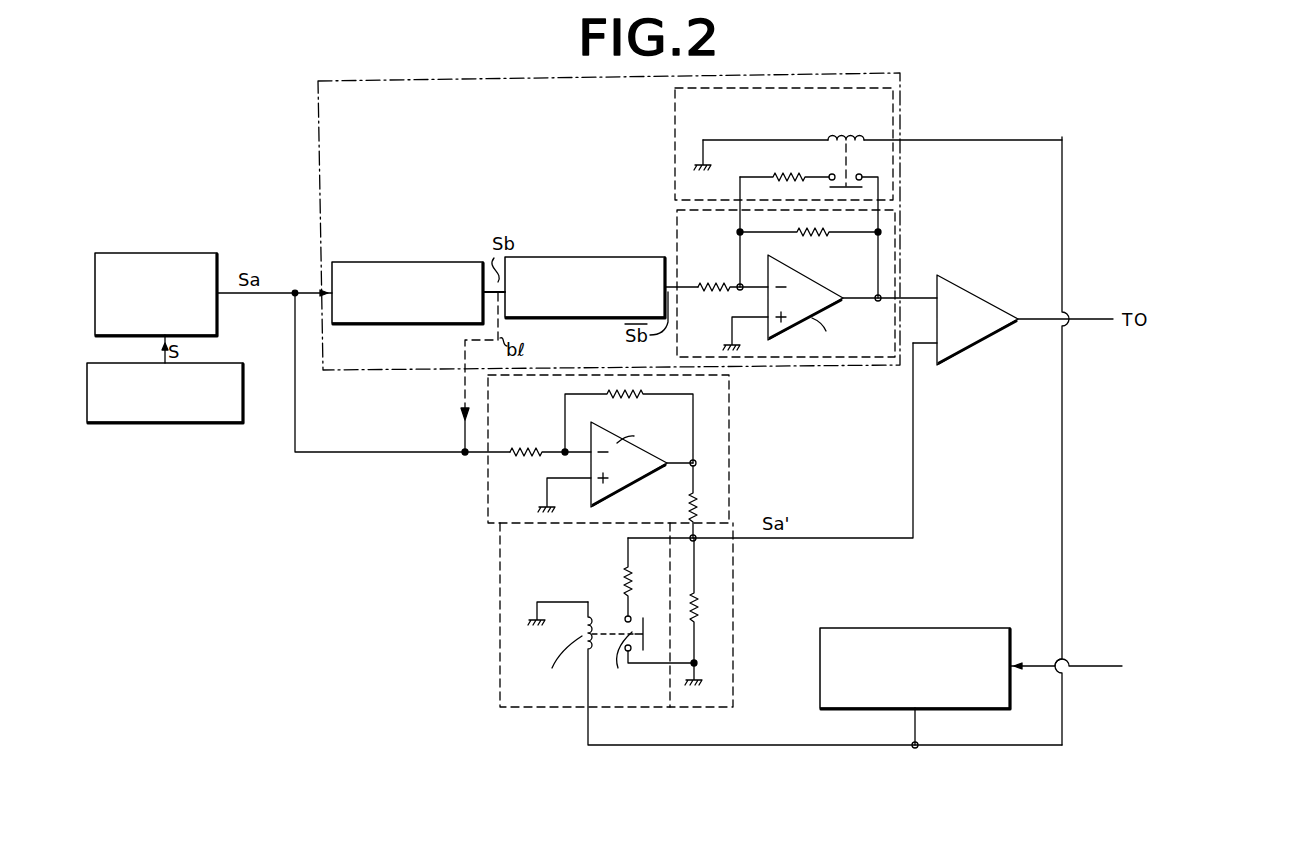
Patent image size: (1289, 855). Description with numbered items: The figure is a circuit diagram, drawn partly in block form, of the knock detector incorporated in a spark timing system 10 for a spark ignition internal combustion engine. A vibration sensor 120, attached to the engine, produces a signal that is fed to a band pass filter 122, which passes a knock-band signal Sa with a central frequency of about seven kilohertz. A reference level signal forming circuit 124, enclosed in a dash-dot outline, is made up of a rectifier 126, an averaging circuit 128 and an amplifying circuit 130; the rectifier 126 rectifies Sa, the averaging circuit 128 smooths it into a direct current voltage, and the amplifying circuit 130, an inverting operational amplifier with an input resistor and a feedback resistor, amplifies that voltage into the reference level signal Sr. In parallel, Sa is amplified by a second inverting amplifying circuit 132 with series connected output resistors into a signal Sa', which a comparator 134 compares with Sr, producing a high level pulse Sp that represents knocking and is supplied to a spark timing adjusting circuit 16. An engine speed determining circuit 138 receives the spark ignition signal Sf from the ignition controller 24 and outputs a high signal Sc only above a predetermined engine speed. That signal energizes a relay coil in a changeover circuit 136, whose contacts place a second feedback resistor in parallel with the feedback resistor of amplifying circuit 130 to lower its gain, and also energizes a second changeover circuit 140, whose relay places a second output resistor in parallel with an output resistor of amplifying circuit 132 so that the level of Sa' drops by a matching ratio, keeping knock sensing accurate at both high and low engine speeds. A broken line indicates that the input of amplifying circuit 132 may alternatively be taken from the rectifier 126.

The spark timing system 10 is at (222, 96).
The vibration sensor 120 is at (203, 424).
The band pass filter 122 is at (183, 252).
The reference level signal forming circuit 124 is at (455, 118).
The rectifier 126 is at (457, 262).
The averaging circuit 128 is at (593, 257).
The amplifying circuit 130 is at (677, 222).
The amplifying circuit 132 is at (732, 450).
The comparator 134 is at (977, 293).
The changeover circuit 136 is at (677, 128).
The engine speed determining circuit 138 is at (953, 628).
The second changeover circuit 140 is at (497, 624).
The spark timing adjusting circuit 16 is at (1212, 337).
The ignition controller 24 is at (1161, 634).